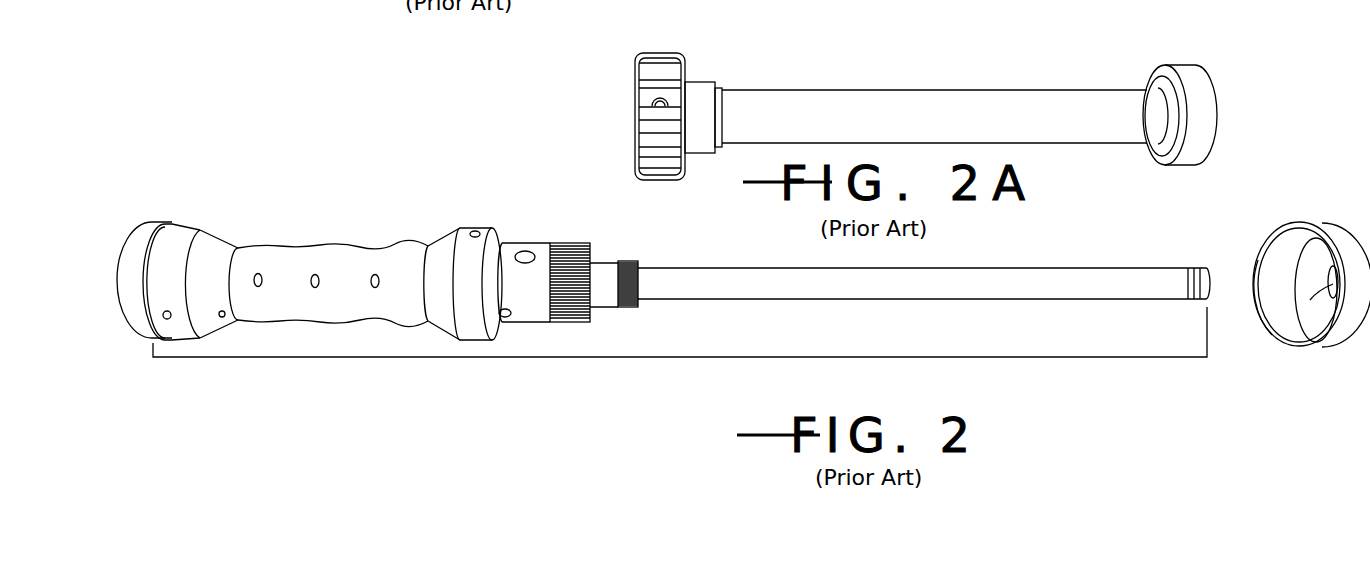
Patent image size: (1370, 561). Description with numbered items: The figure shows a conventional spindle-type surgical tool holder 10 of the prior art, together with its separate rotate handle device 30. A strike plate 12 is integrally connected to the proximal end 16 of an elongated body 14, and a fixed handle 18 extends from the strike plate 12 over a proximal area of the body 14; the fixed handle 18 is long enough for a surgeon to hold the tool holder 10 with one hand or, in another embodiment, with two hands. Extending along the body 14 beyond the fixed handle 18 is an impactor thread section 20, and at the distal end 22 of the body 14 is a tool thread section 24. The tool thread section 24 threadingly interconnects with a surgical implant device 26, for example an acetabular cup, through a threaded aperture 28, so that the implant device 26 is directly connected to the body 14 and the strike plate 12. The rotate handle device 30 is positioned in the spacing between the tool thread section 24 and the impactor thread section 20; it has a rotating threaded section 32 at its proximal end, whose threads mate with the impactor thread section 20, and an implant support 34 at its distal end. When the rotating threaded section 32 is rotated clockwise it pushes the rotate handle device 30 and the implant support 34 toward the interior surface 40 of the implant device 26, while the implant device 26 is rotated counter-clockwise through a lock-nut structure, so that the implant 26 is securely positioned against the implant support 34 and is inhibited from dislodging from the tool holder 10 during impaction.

In FIG. 2, the spindle-type surgical tool holder 10 is at (567, 163).
In FIG. 2, the strike plate 12 is at (127, 235).
In FIG. 2, the body 14 is at (1043, 357).
In FIG. 2, the proximal end 16 is at (150, 343).
In FIG. 2, the fixed handle 18 is at (294, 243).
In FIG. 2, the impactor thread section 20 is at (617, 256).
In FIG. 2, the distal end 22 is at (1212, 300).
In FIG. 2, the tool thread section 24 is at (1212, 258).
In FIG. 2, the surgical implant device 26 is at (1350, 250).
In FIG. 2, the threaded aperture 28 is at (1318, 342).
In FIG. 2, the interior surface 40 is at (1278, 342).
In FIG. 2A, the rotate handle device 30 is at (833, 90).
In FIG. 2A, the rotating threaded section 32 is at (658, 55).
In FIG. 2A, the implant support 34 is at (1188, 65).